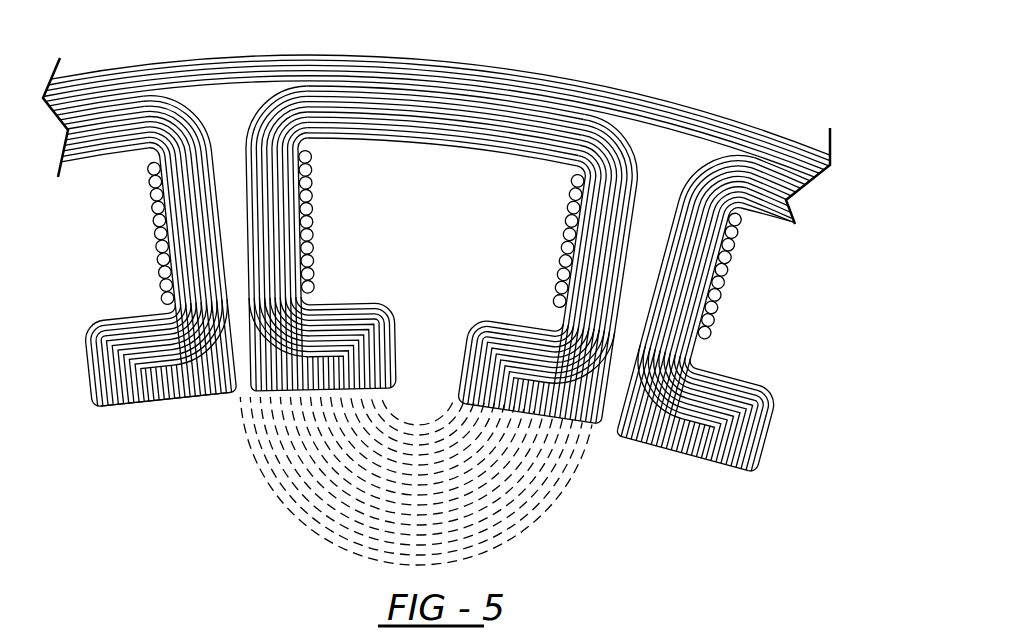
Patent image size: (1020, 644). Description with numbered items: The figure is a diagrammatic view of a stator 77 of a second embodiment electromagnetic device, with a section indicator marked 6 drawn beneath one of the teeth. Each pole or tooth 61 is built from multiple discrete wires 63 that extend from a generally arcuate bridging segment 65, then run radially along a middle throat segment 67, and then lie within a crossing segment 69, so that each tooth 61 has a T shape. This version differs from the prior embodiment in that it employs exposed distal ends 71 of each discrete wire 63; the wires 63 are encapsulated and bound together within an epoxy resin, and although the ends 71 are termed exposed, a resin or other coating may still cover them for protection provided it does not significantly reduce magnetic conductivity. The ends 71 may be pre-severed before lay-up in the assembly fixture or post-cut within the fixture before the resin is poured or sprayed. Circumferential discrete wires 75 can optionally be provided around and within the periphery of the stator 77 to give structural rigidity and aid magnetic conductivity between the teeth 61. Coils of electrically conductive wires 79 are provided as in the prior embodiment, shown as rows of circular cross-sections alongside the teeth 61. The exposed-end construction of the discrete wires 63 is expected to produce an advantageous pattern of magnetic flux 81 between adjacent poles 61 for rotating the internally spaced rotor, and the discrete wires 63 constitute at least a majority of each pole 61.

The pole or tooth 61 is at (187, 209).
The discrete wires 63 is at (128, 317).
The bridging segment 65 is at (448, 134).
The middle throat segment 67 is at (274, 210).
The crossing segment 69 is at (372, 350).
The exposed distal ends 71 is at (142, 406).
The circumferential discrete wires 75 is at (222, 66).
The stator 77 is at (650, 70).
The coils of electrically conductive wires 79 is at (704, 318).
The magnetic flux 81 is at (531, 536).
The section line indicator 6 is at (138, 429).